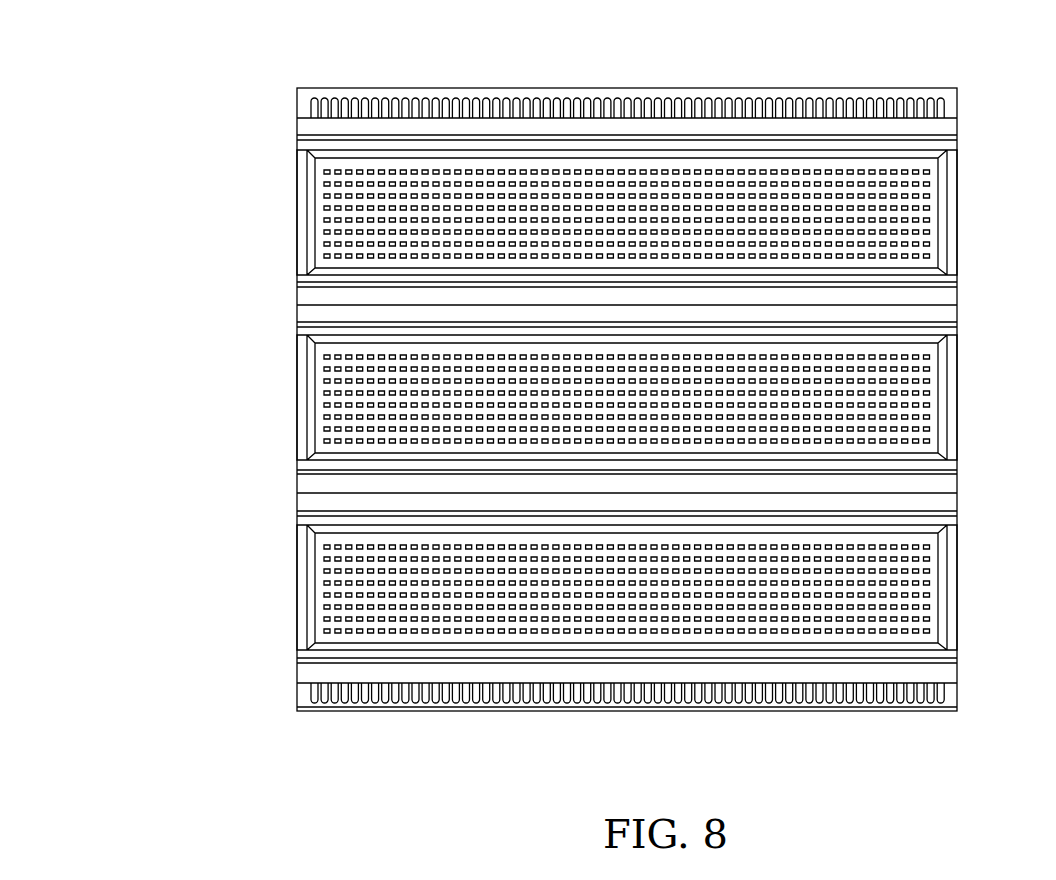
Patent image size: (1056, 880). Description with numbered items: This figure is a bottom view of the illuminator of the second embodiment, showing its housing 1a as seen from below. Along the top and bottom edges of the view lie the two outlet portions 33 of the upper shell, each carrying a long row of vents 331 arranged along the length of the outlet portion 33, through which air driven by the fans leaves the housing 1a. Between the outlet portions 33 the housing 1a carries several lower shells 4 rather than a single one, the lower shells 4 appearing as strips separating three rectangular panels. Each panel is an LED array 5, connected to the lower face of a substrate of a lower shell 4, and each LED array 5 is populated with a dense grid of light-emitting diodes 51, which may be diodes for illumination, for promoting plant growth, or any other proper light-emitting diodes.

The housing 1a is at (246, 403).
The outlet portion 33 is at (945, 95).
The vents 331 is at (440, 100).
The lower shell 4 is at (962, 294).
The LED array 5 is at (325, 218).
The light-emitting diodes 51 is at (326, 183).